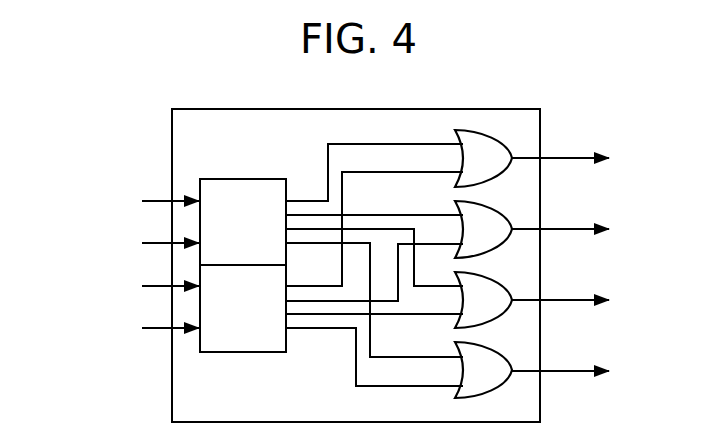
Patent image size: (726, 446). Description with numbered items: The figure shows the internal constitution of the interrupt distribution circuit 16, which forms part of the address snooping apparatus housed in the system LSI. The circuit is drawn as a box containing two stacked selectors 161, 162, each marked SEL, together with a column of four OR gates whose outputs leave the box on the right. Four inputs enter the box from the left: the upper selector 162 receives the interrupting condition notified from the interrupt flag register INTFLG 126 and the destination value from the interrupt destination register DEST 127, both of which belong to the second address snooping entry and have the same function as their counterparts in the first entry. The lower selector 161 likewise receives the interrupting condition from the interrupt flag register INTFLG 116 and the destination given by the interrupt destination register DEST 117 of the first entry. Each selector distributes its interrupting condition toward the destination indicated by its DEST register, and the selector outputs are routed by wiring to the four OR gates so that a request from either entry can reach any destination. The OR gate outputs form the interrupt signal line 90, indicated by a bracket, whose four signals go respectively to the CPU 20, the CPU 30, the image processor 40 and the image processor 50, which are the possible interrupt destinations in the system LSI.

The interrupt distribution circuit 16 is at (487, 109).
The selector 161 is at (238, 353).
The selector 162 is at (248, 178).
The interrupt signal line 90 is at (596, 250).
The CPU 20 is at (596, 158).
The CPU 30 is at (596, 229).
The image processor 40 is at (596, 300).
The image processor 50 is at (596, 371).
The interrupt flag register (INTFLG) 116 is at (111, 286).
The interrupt destination register (DEST) 117 is at (111, 328).
The interrupt flag register (INTFLG) 126 is at (111, 201).
The interrupt destination register (DEST) 127 is at (111, 243).